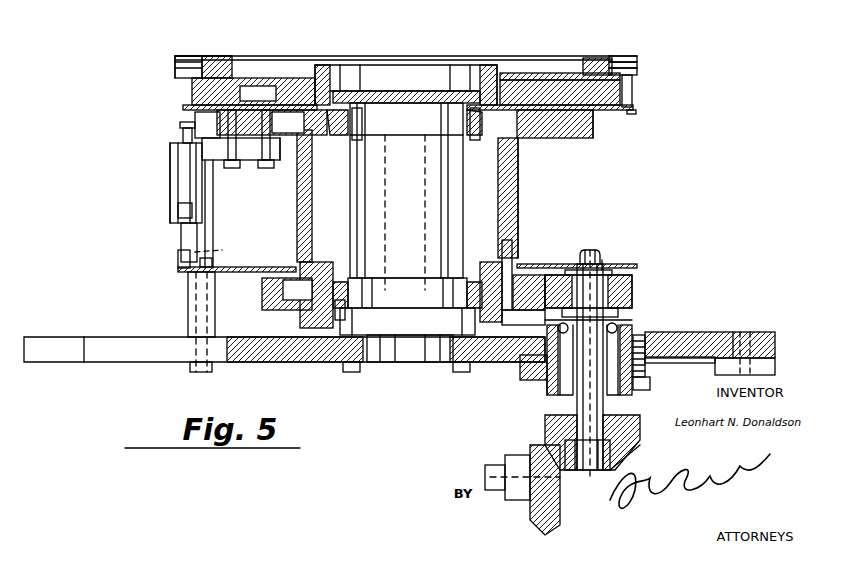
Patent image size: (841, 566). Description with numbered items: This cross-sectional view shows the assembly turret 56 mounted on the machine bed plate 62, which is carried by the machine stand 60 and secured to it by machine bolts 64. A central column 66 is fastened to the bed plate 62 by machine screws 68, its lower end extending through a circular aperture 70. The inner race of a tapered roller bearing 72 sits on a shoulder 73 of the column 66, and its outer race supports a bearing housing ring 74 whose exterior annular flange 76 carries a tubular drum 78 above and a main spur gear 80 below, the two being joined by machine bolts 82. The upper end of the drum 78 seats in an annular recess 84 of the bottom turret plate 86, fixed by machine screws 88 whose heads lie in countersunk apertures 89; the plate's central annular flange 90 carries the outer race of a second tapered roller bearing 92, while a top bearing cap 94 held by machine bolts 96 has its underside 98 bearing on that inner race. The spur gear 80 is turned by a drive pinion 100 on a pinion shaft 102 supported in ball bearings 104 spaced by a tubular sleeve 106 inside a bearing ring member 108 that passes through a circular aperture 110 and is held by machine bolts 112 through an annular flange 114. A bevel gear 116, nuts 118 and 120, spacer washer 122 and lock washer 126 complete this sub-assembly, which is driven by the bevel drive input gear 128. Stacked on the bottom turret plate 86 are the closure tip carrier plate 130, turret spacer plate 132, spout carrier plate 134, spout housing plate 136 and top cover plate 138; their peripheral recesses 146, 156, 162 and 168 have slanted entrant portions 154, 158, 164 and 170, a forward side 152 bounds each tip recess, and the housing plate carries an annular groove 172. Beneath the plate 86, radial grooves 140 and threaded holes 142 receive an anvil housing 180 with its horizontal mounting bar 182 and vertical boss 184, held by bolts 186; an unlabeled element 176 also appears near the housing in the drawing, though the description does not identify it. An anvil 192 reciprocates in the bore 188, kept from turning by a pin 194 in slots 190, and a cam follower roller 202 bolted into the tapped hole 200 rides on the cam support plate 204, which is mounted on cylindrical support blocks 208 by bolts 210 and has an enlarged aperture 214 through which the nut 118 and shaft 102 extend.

The turret assembly 56 is at (180, 47).
The machine stand 60 is at (775, 360).
The machine bed plate 62 is at (153, 362).
The machine bolts 64 is at (760, 332).
The central column 66 is at (350, 185).
The machine screws 68 is at (352, 372).
The circular aperture 70 is at (378, 362).
The tapered roller bearing 72 is at (460, 289).
The shoulder 73 is at (338, 270).
The bearing housing ring 74 is at (500, 260).
The exterior annular flange 76 is at (318, 265).
The tubular drum 78 is at (519, 187).
The main spur gear 80 is at (275, 310).
The machine bolts 82 is at (505, 312).
The annular recess 84 is at (272, 122).
The bottom turret plate 86 is at (575, 138).
The machine screws 88 is at (500, 160).
The countersunk apertures 89 is at (496, 119).
The central annular flange 90 is at (313, 142).
The tapered roller bearing 92 is at (474, 136).
The top bearing cap 94 is at (406, 85).
The machine bolts 96 is at (423, 135).
The underside 98 is at (393, 104).
The drive pinion 100 is at (632, 287).
The pinion shaft 102 is at (620, 325).
The ball bearings 104 is at (640, 330).
The tubular sleeve 106 is at (652, 364).
The bearing ring member 108 is at (558, 400).
The circular aperture 110 is at (520, 362).
The machine bolts 112 is at (650, 382).
The annular flange 114 is at (547, 386).
The bevel gear 116 is at (548, 427).
The nut 118 is at (590, 250).
The nut 120 is at (580, 470).
The spacer washer 122 is at (606, 262).
The lock washer 126 is at (612, 455).
The bevel drive input gear 128 is at (540, 525).
The closure tip carrier plate 130 is at (594, 118).
The turret spacer plate 132 is at (515, 74).
The spout carrier plate 134 is at (546, 80).
The spout housing plate 136 is at (593, 58).
The top cover plate 138 is at (618, 56).
The radially extending grooves 140 is at (280, 160).
The threaded holes 142 is at (258, 93).
The U-shaped recesses 146 is at (186, 108).
The forward side 152 is at (632, 111).
The slanted entrant portion 154 is at (632, 106).
The U-shaped recesses 156 is at (192, 96).
The slanted entrant portion 158 is at (632, 88).
The recess 162 is at (192, 74).
The slanted entrant portion 164 is at (637, 69).
The recesses 168 is at (215, 56).
The slanted entrant portion 170 is at (628, 60).
The annular groove 172 is at (175, 63).
The post 176 is at (205, 125).
The anvil housing 180 is at (214, 196).
The horizontal mounting bar 182 is at (236, 168).
The vertical boss 184 is at (170, 178).
The bolts 186 is at (268, 168).
The bore 188 is at (170, 158).
The slots 190 is at (178, 212).
The anvil 192 is at (180, 132).
The pin 194 is at (181, 228).
The tapped hole 200 is at (222, 250).
The cam follower roller 202 is at (182, 268).
The cam support plate 204 is at (636, 266).
The cylindrical support blocks 208 is at (188, 314).
The bolts 210 is at (213, 262).
The enlarged aperture 214 is at (572, 270).